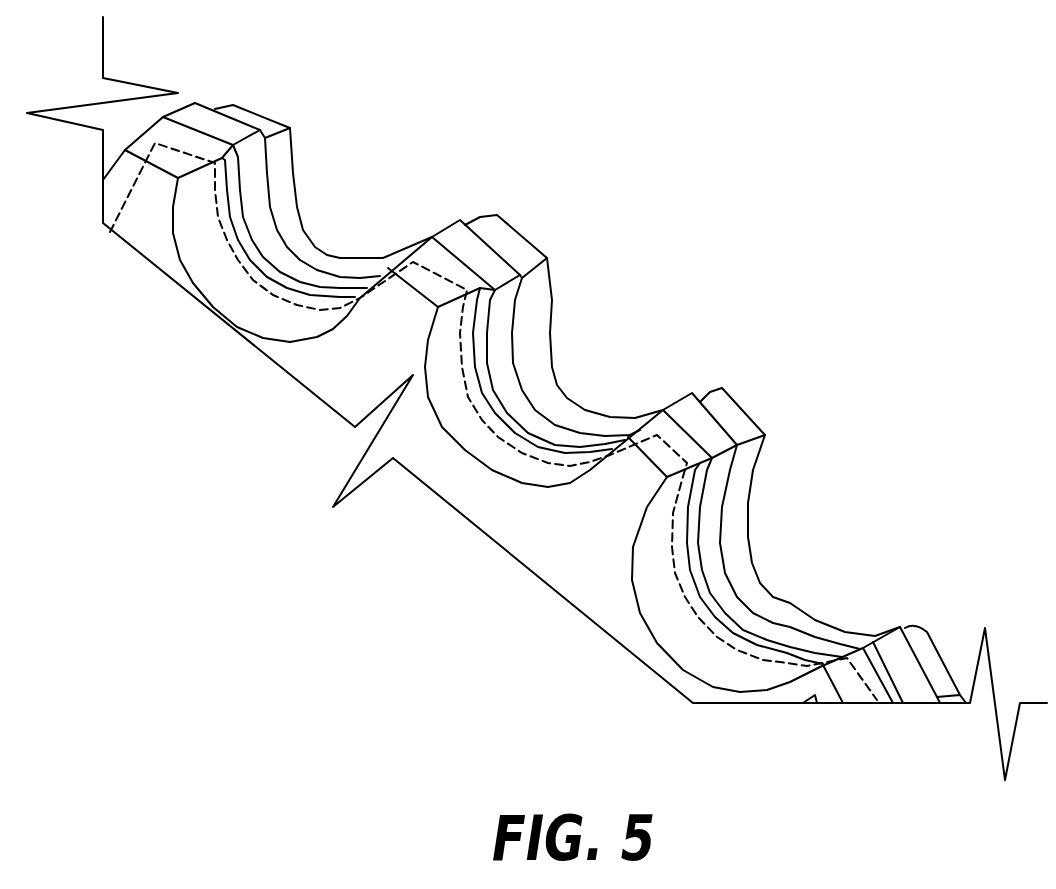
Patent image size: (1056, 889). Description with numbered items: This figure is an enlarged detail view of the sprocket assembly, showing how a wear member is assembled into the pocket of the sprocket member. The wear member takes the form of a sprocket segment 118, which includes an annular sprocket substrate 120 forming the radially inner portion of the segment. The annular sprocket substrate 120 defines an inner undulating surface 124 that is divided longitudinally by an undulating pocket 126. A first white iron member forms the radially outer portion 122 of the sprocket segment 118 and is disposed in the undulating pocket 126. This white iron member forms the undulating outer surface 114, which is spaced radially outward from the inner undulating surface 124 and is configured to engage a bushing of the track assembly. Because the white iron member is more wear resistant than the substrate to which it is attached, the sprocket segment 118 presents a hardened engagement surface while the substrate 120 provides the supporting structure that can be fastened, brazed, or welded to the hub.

The undulating outer surface 114 is at (532, 403).
The sprocket segment 118 is at (538, 411).
The annular sprocket substrate 120 is at (537, 398).
The outer portion 122 is at (562, 393).
The inner undulating surface 124 is at (590, 404).
The undulating pocket 126 is at (493, 421).